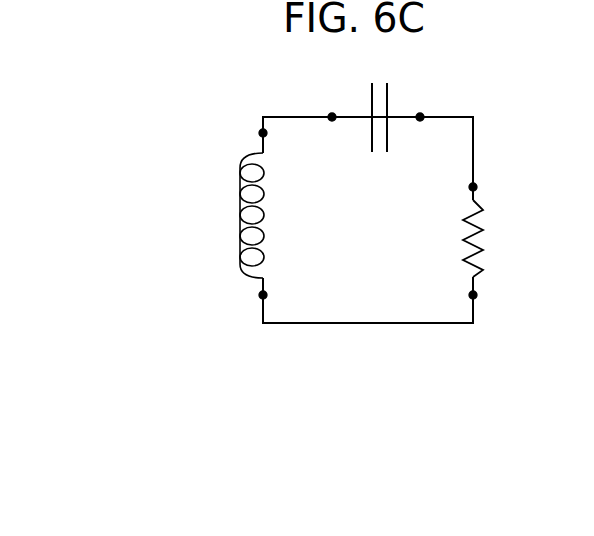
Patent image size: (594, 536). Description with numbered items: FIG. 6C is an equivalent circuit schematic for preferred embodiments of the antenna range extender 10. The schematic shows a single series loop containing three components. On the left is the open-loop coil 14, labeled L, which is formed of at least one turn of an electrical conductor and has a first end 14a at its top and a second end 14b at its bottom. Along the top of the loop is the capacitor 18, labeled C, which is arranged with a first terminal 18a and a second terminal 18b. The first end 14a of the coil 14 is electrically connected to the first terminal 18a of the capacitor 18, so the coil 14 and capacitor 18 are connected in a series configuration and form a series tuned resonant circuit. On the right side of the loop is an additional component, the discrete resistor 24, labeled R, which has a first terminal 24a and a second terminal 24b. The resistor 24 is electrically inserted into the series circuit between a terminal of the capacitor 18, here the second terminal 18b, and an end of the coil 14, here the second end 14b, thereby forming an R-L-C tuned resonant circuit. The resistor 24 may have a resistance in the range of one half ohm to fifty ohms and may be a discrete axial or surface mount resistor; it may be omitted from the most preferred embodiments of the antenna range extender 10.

The antenna range extender 10 is at (140, 271).
The open-loop coil 14 is at (240, 203).
The first end 14a is at (262, 133).
The second end 14b is at (260, 295).
The capacitor 18 is at (367, 155).
The first terminal 18a is at (332, 115).
The second terminal 18b is at (422, 117).
The discrete resistor 24 is at (483, 232).
The first terminal 24a is at (478, 187).
The second terminal 24b is at (478, 295).